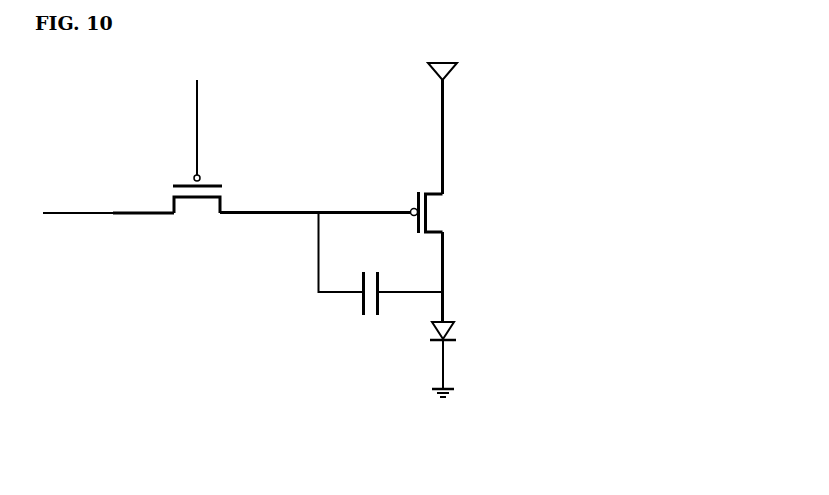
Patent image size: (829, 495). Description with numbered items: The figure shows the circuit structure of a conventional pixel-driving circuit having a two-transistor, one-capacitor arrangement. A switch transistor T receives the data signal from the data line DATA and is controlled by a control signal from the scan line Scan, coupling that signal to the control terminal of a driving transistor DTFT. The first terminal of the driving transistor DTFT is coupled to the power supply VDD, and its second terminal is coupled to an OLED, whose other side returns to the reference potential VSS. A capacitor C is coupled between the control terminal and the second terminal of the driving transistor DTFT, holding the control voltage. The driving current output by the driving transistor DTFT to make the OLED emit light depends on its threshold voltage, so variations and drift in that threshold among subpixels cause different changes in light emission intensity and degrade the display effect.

The data line DATA is at (107, 195).
The scan line Scan is at (216, 113).
The switch transistor T is at (197, 214).
The driving transistor DTFT is at (463, 212).
The capacitor C is at (381, 282).
The element OLED is at (482, 352).
The power supply VDD is at (474, 126).
The ground voltage VSS is at (472, 396).